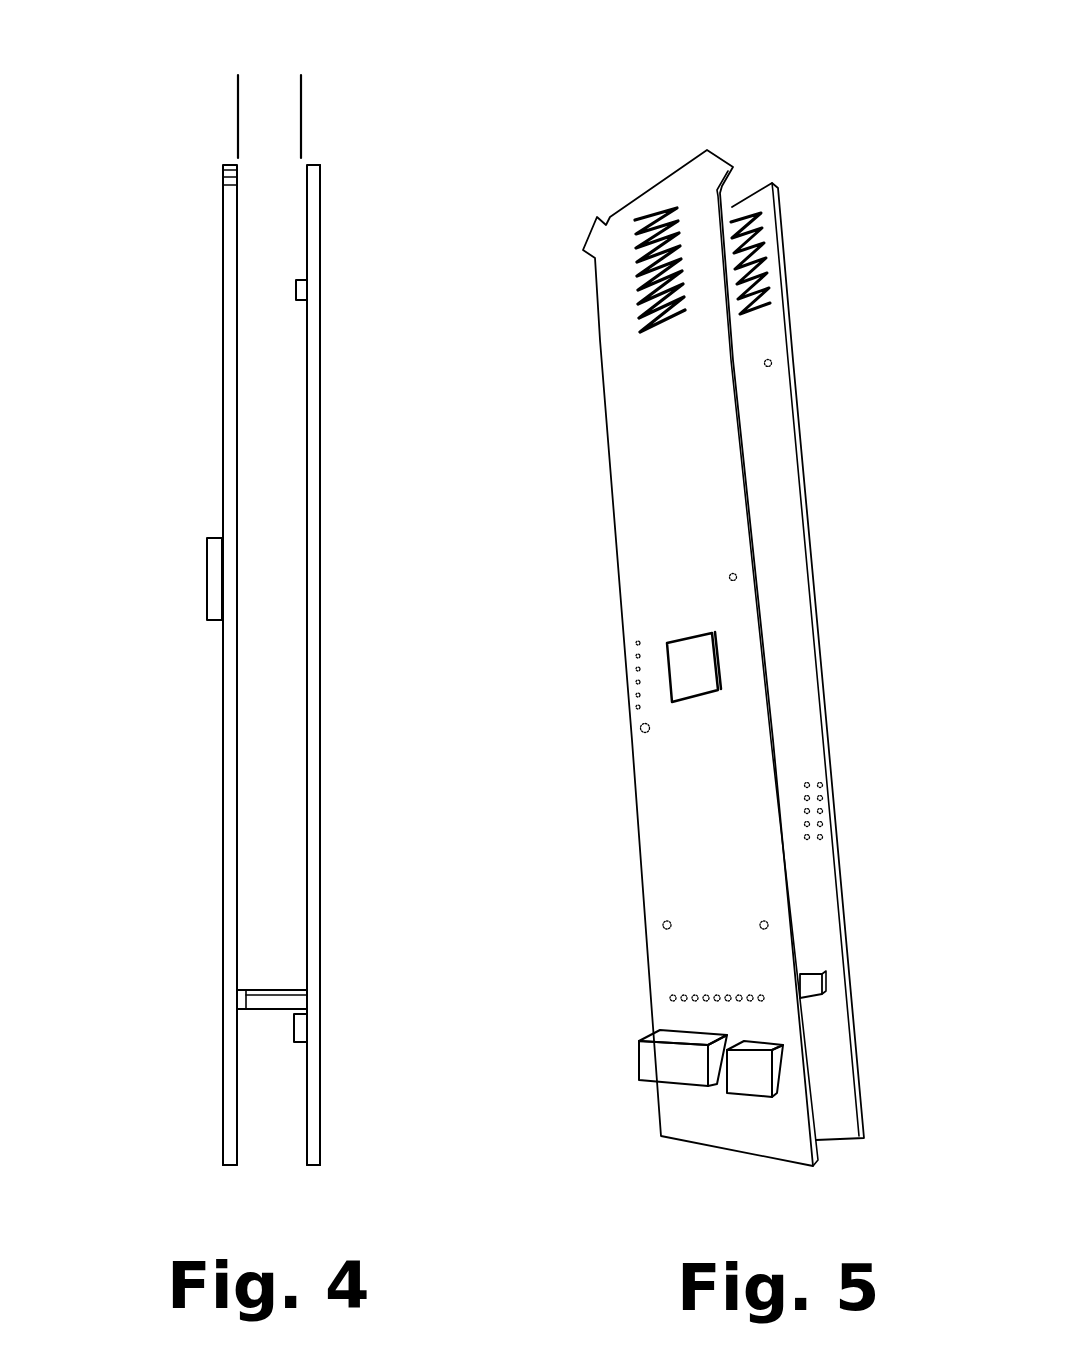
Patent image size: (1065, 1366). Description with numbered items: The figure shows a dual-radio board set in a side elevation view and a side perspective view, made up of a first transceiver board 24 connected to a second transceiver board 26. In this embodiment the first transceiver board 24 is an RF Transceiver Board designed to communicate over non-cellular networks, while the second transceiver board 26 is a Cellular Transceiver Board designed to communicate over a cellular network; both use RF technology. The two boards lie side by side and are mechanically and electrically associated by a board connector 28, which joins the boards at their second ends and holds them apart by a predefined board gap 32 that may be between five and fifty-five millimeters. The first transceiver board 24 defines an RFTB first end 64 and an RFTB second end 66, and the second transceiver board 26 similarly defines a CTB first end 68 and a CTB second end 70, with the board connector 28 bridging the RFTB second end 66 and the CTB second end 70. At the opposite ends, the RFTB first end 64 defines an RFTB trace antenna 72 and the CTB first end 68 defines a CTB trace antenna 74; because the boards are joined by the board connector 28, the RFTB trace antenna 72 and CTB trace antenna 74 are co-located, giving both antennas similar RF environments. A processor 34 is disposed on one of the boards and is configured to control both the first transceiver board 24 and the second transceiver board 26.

In FIG. 4, the first transceiver board (RF Transceiver Board, RFTB) 24 is at (222, 442).
In FIG. 5, the first transceiver board (RF Transceiver Board, RFTB) 24 is at (661, 830).
In FIG. 4, the second transceiver board (Cellular Transceiver Board, CTB) 26 is at (318, 585).
In FIG. 5, the second transceiver board (Cellular Transceiver Board, CTB) 26 is at (797, 587).
In FIG. 4, the board connector 28 is at (270, 1004).
In FIG. 4, the board gap 32 is at (263, 78).
In FIG. 4, the processor 34 is at (208, 582).
In FIG. 5, the processor 34 is at (690, 670).
In FIG. 4, the RFTB first end 64 is at (228, 245).
In FIG. 4, the RFTB second end 66 is at (226, 1101).
In FIG. 4, the CTB first end 68 is at (320, 247).
In FIG. 4, the CTB second end 70 is at (312, 1115).
In FIG. 5, the RFTB trace antenna 72 is at (612, 251).
In FIG. 5, the CTB trace antenna 74 is at (780, 327).